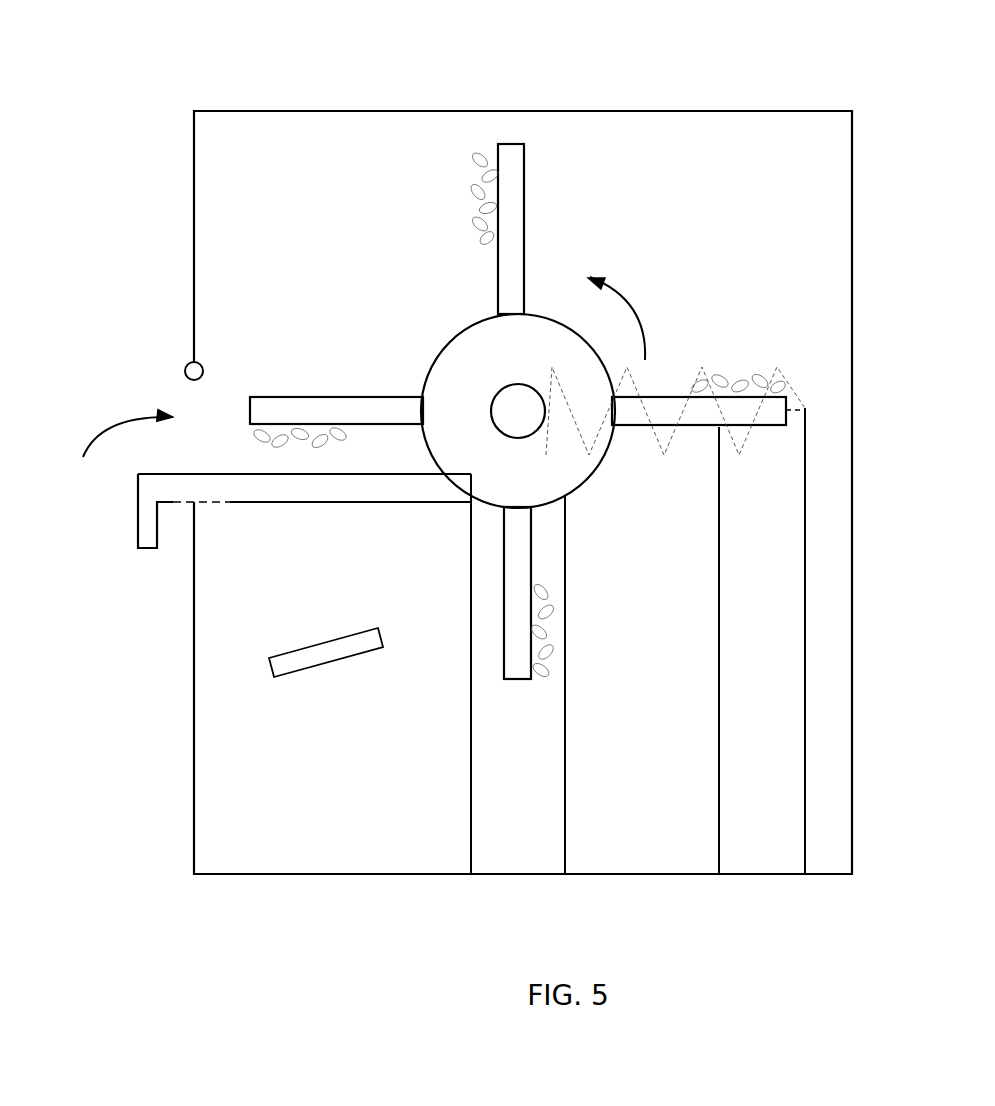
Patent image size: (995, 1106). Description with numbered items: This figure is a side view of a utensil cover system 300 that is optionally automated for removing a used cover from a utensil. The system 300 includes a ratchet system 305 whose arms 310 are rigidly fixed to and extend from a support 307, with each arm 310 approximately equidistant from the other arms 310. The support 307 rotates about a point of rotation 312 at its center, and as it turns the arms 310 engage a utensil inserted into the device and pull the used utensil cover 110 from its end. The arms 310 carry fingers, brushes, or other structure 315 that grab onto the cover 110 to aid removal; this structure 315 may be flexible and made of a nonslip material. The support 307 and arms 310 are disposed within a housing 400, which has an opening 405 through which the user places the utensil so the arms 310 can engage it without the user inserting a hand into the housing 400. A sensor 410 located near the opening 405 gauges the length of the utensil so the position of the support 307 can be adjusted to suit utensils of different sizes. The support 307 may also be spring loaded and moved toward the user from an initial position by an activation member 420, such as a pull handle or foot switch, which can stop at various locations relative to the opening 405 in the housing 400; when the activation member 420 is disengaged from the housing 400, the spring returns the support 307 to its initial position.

The used utensil cover 110 is at (333, 660).
The utensil cover system 300 is at (423, 374).
The ratchet system 305 is at (408, 370).
The support 307 is at (592, 485).
The arms 310 is at (524, 198).
The point of rotation 312 is at (492, 423).
The structure 315 is at (550, 613).
The housing 400 is at (683, 111).
The opening 405 is at (114, 445).
The sensor 410 is at (186, 367).
The activation member 420 is at (138, 548).